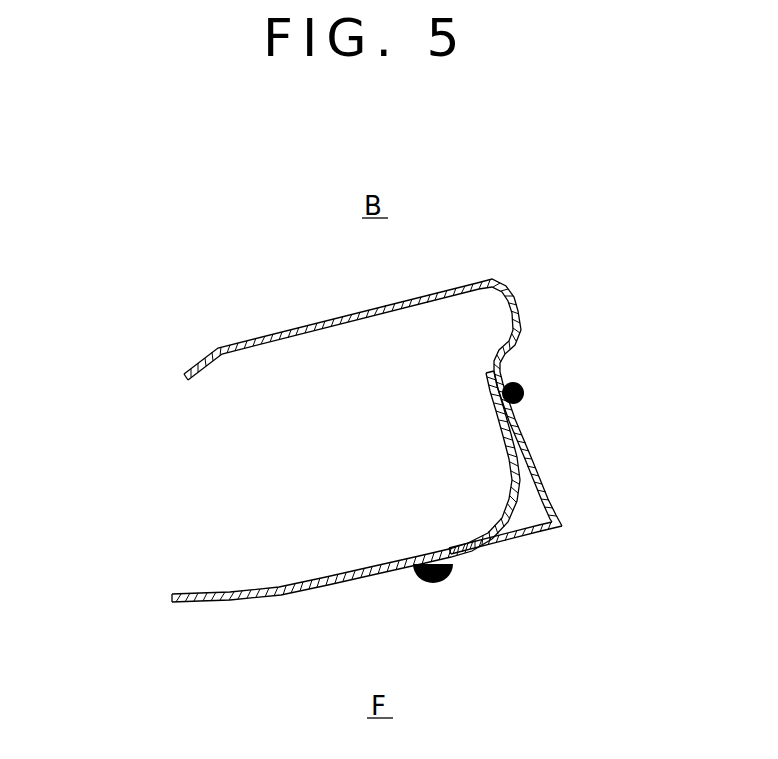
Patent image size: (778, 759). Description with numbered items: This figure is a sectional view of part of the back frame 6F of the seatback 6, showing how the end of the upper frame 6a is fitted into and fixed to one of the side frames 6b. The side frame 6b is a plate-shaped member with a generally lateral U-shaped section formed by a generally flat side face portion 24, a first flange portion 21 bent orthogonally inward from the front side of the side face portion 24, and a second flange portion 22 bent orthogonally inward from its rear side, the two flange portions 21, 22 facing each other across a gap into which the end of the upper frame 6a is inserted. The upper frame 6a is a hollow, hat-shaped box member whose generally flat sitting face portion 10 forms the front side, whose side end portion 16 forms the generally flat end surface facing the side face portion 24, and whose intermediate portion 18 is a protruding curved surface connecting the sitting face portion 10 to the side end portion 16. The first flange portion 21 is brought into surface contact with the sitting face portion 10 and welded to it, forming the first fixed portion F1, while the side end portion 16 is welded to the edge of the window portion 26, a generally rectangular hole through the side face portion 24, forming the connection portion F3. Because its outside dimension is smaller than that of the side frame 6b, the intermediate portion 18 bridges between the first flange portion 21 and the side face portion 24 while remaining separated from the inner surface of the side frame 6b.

The seatback 6 is at (345, 443).
The front pillar outer panel 6F is at (345, 443).
The upper frame 6a is at (195, 593).
The side frames 6b is at (520, 310).
The sitting face portion 10 is at (373, 570).
The side end portions 16 is at (500, 410).
The intermediate portion 18 is at (507, 492).
The first flange portion 21 is at (515, 551).
The second flange portion 22 is at (302, 328).
The side face portion 24 is at (530, 438).
The window portion 26 is at (520, 418).
The first fixed portion F1 is at (433, 583).
The connection portion F3 is at (522, 392).